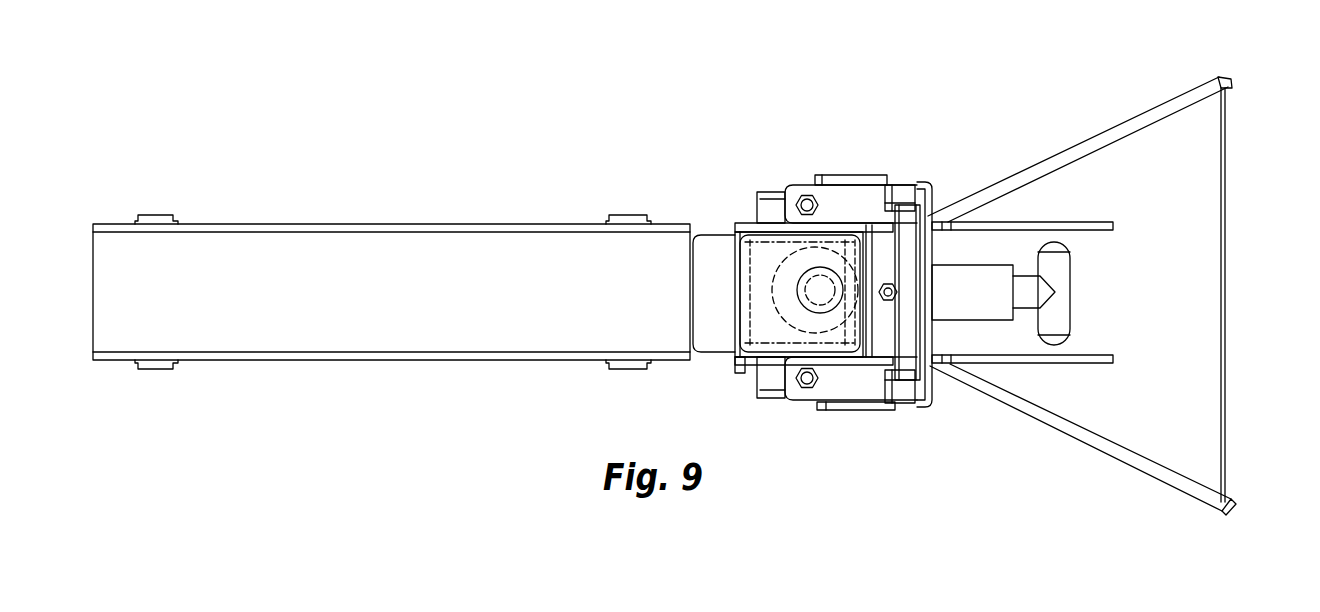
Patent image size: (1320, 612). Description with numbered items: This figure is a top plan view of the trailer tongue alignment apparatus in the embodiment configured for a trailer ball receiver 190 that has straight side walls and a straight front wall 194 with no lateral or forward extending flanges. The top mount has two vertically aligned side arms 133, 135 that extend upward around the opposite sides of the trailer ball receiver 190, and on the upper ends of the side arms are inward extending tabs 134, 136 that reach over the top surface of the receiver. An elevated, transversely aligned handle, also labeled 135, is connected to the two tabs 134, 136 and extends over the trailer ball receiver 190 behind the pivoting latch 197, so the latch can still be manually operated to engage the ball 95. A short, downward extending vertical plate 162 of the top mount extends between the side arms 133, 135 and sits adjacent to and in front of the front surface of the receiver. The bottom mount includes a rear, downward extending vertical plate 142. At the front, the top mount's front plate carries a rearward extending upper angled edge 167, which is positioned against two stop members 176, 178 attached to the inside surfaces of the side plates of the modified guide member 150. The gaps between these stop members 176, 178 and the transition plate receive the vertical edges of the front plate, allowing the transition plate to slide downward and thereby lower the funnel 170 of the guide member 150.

The ball 95 is at (785, 318).
The side arm 133 is at (785, 360).
The inward extending tab 134 is at (733, 355).
The side arm 135 is at (710, 287).
The inward extending tab 136 is at (737, 237).
The vertical plate 142 is at (757, 194).
The guide member 150 is at (965, 156).
The vertical plate 162 is at (868, 333).
The upper angled edge 167 is at (900, 238).
The funnel 170 is at (1245, 111).
The stop member 176 is at (900, 393).
The stop member 178 is at (905, 176).
The trailer ball receiver 190 is at (727, 190).
The straight front wall 194 is at (903, 187).
The pivoting latch 197 is at (780, 284).